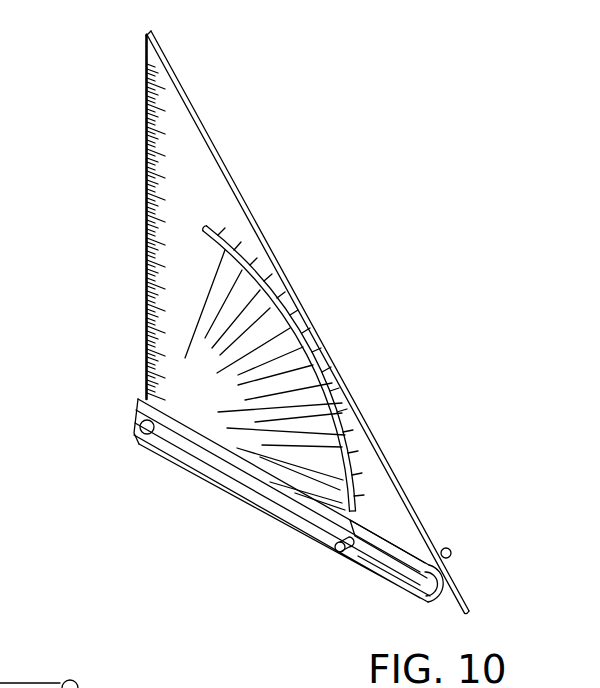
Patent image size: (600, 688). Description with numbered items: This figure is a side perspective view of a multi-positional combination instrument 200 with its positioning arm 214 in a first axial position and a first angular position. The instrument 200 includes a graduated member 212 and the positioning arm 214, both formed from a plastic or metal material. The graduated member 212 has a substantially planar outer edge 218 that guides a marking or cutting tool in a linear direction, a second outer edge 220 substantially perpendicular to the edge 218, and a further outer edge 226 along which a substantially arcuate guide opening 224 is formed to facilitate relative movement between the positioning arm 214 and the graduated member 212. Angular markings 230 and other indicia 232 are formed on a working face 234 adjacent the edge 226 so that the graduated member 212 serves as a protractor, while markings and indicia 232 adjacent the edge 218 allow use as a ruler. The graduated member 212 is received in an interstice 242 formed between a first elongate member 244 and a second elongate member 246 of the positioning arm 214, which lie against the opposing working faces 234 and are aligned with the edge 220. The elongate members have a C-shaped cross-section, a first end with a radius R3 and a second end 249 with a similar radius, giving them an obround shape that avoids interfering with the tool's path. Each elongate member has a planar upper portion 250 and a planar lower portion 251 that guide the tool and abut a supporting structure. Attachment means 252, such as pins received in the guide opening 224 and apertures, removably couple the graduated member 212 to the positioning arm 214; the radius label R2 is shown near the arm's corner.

The multi-positional combination instrument 200 is at (93, 55).
The graduated member 212 is at (141, 100).
The outer edge 218 is at (147, 133).
The angular markings 230 is at (153, 166).
The indicia 232 is at (170, 186).
The guide opening 224 is at (200, 224).
The outer edge 226 is at (257, 218).
The working face 234 is at (376, 412).
The positioning arm 214 is at (233, 508).
The upper portion 250 is at (282, 487).
The lower portion 251 is at (302, 535).
The attachment means 252 is at (150, 443).
The first elongate member 244 is at (383, 565).
The second end 249 is at (401, 584).
The second elongate member 246 is at (448, 549).
The interstice 242 is at (445, 572).
The second outer edge 220 is at (460, 612).
The radius R2 is at (140, 397).
The radius R3 is at (443, 597).